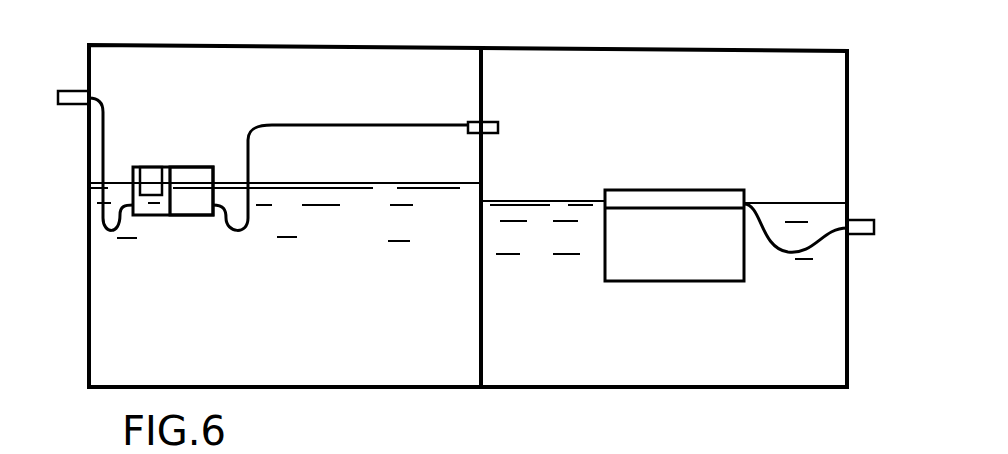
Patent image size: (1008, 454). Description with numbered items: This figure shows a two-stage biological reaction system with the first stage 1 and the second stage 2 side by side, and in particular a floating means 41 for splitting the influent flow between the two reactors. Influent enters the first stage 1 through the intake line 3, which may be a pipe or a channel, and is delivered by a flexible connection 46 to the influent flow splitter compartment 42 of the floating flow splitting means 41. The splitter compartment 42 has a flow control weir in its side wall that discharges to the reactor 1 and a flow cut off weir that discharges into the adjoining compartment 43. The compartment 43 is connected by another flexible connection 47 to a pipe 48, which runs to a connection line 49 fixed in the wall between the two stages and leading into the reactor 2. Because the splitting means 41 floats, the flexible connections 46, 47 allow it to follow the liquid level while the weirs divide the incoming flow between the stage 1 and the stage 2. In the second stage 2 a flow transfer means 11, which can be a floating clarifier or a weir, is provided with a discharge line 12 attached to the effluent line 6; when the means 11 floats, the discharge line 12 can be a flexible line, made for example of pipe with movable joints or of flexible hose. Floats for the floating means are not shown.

The first stage of biological reaction 1 is at (405, 47).
The second stage of biological reaction 2 is at (633, 47).
The intake line 3 is at (71, 89).
The effluent line 6 is at (867, 220).
The flow transfer means 11 is at (658, 200).
The discharge line 12 is at (792, 253).
The floating flow splitting means 41 is at (198, 217).
The influent flow splitter compartment 42 is at (155, 167).
The compartment 43 is at (190, 172).
The flexible connection 46 is at (117, 230).
The flexible connection 47 is at (250, 162).
The pipe 48 is at (348, 125).
The connection line 49 is at (490, 122).